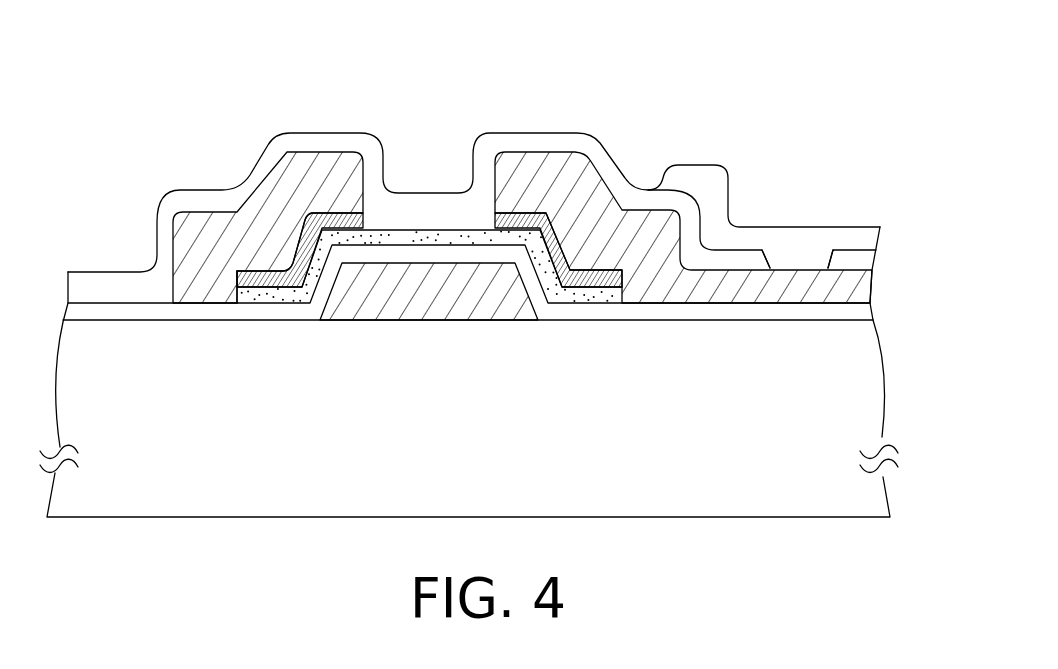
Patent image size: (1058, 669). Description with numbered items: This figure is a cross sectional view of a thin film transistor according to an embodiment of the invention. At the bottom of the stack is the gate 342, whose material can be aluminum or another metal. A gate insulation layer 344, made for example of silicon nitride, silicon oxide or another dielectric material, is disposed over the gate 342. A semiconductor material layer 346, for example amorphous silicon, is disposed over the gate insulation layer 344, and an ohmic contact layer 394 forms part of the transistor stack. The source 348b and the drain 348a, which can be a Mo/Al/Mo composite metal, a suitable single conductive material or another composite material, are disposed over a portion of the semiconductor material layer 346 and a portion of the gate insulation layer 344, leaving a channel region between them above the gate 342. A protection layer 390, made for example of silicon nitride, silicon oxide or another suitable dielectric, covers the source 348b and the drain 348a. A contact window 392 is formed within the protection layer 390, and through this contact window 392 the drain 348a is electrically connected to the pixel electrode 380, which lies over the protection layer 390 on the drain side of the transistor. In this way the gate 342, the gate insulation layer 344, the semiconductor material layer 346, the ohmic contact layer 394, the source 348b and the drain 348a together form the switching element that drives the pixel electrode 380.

The gate 342 is at (435, 300).
The gate insulation layer 344 is at (575, 313).
The semiconductor material layer 346 is at (613, 292).
The drain 348a is at (517, 178).
The source 348b is at (335, 163).
The pixel electrode 380 is at (790, 235).
The protection layer 390 is at (578, 143).
The contact window 392 is at (848, 264).
The ohmic contact layer 394 is at (602, 270).